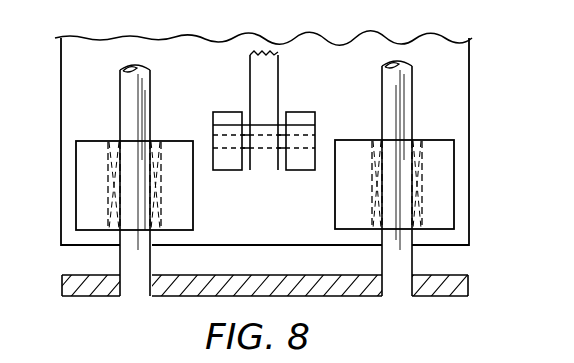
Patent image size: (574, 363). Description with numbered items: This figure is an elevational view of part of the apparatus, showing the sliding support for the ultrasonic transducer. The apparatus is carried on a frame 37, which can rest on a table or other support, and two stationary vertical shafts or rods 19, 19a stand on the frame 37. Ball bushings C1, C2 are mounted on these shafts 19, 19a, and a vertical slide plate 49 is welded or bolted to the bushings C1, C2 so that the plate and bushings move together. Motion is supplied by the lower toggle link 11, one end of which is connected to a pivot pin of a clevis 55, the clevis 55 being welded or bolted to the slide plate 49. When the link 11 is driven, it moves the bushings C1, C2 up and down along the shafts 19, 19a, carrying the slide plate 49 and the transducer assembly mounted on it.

The vertical shaft 19 is at (150, 80).
The vertical shaft 19a is at (412, 76).
The lower toggle link 11 is at (278, 78).
The slide plate 49 is at (286, 130).
The clevis 55 is at (242, 152).
The frame 37 is at (261, 275).
The ball bushing C1 is at (76, 201).
The ball bushing C2 is at (454, 204).